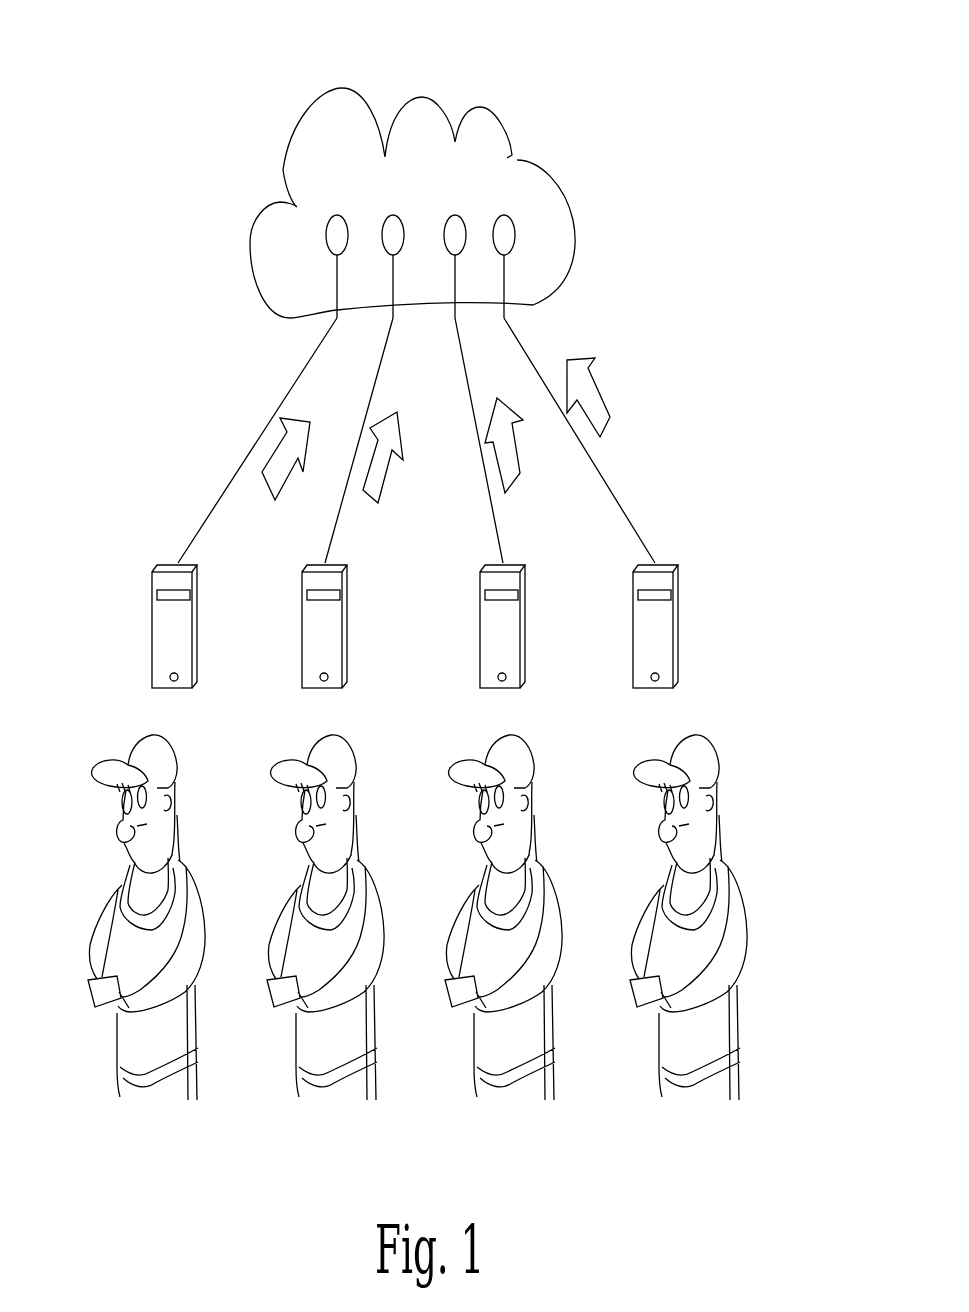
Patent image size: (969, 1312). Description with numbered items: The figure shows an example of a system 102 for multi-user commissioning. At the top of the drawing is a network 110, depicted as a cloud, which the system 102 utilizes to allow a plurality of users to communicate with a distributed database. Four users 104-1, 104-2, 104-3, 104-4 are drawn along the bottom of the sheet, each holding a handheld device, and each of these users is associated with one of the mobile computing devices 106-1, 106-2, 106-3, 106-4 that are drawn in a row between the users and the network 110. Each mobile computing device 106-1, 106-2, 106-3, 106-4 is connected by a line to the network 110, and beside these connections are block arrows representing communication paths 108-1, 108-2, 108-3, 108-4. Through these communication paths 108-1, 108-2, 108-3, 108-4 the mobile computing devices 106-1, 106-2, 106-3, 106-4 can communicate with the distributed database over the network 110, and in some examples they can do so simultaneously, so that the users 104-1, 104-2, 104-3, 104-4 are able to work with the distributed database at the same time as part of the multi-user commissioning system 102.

The system 102 is at (700, 56).
The network 110 is at (535, 167).
The user 104-1 is at (150, 1062).
The user 104-2 is at (329, 1062).
The user 104-3 is at (507, 1062).
The user 104-4 is at (692, 1062).
The mobile computing device 106-1 is at (152, 635).
The mobile computing device 106-2 is at (302, 635).
The mobile computing device 106-3 is at (480, 635).
The mobile computing device 106-4 is at (633, 635).
The communication path 108-1 is at (265, 476).
The communication path 108-2 is at (392, 475).
The communication path 108-3 is at (520, 474).
The communication path 108-4 is at (598, 386).